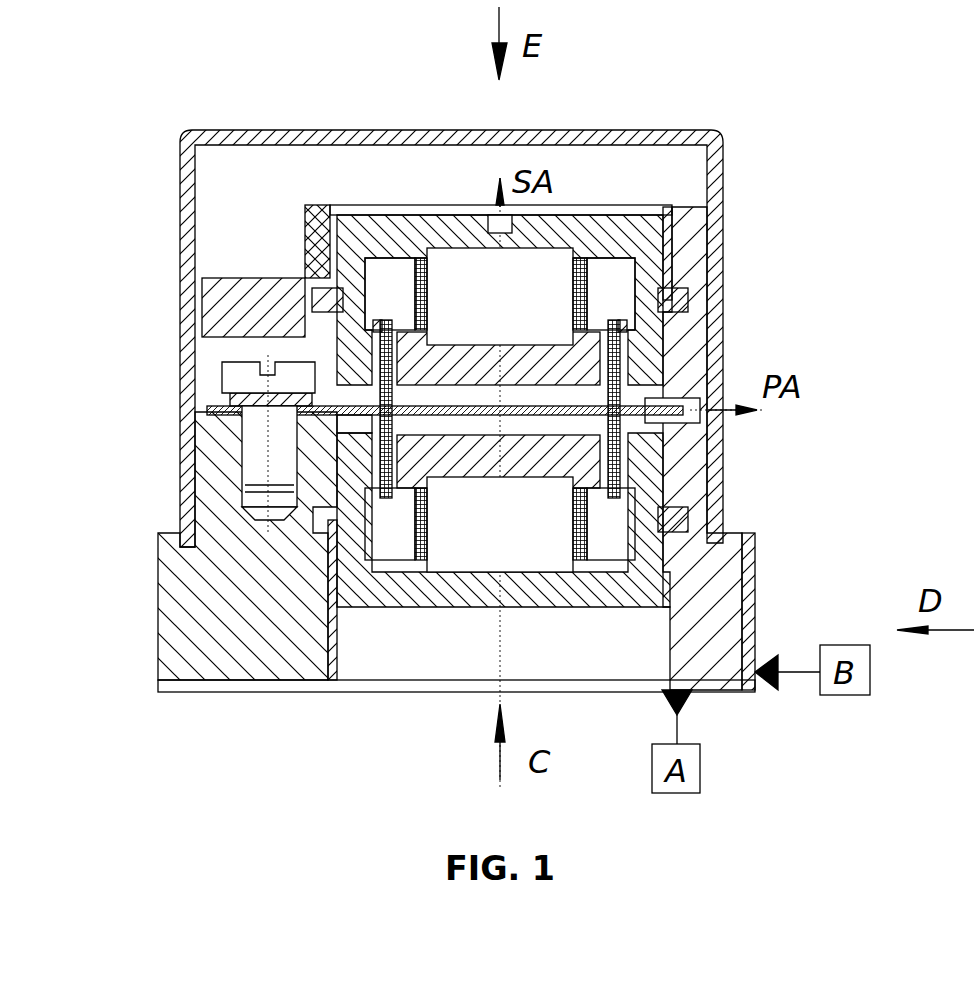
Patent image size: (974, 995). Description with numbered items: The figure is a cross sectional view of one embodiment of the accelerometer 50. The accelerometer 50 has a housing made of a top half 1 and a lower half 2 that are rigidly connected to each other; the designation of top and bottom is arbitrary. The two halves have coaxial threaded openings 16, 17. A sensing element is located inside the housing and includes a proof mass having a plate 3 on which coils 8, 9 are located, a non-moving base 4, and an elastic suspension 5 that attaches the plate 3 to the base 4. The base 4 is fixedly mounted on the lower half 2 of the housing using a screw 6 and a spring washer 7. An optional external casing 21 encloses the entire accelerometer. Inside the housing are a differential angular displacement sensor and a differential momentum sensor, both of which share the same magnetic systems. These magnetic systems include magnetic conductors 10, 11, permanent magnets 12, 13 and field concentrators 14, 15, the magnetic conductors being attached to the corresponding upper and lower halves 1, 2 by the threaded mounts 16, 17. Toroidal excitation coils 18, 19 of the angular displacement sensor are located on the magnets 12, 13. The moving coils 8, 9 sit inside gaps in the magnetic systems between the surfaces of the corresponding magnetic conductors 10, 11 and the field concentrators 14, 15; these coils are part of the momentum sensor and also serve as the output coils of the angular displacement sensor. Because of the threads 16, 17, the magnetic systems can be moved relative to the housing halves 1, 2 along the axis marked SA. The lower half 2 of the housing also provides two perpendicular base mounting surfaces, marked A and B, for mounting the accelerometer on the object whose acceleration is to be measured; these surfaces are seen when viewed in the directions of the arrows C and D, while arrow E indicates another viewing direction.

The accelerometer 50 is at (348, 77).
The top half of housing 1 is at (687, 263).
The lower half of housing 2 is at (253, 643).
The plate 3 is at (675, 410).
The base 4 is at (215, 410).
The elastic suspension 5 is at (343, 412).
The screw 6 is at (243, 377).
The spring washer 7 is at (242, 402).
The coil 8 is at (385, 365).
The coil 9 is at (612, 442).
The magnetic conductor 10 is at (655, 243).
The magnetic conductor 11 is at (355, 453).
The permanent magnet 12 is at (445, 328).
The permanent magnet 13 is at (450, 518).
The field concentrator 14 is at (685, 300).
The field concentrator 15 is at (582, 450).
The threaded opening 16 is at (332, 235).
The threaded opening 17 is at (332, 575).
The toroidal excitation coil 18 is at (422, 288).
The toroidal excitation coil 19 is at (578, 518).
The external casing 21 is at (182, 175).